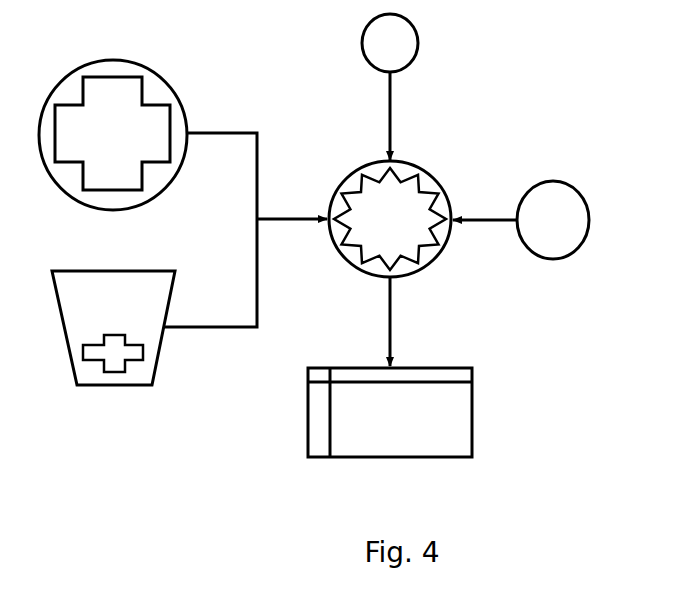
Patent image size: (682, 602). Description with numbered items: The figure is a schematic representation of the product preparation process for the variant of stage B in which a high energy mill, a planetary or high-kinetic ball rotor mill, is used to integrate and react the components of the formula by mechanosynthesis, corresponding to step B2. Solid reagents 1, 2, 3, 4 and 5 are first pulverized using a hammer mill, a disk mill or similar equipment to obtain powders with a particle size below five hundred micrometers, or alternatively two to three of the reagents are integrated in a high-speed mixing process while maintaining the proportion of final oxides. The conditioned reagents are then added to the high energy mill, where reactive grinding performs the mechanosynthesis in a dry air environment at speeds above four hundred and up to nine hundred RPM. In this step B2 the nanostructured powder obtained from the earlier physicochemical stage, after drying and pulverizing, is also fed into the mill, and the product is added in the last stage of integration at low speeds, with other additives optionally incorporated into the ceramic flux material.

The reagent 1 is at (113, 135).
The reagent 2 is at (113, 328).
The reagent 3 is at (390, 219).
The reagent 4 is at (553, 220).
The reagent 5 is at (390, 412).
The step B2 is at (390, 43).